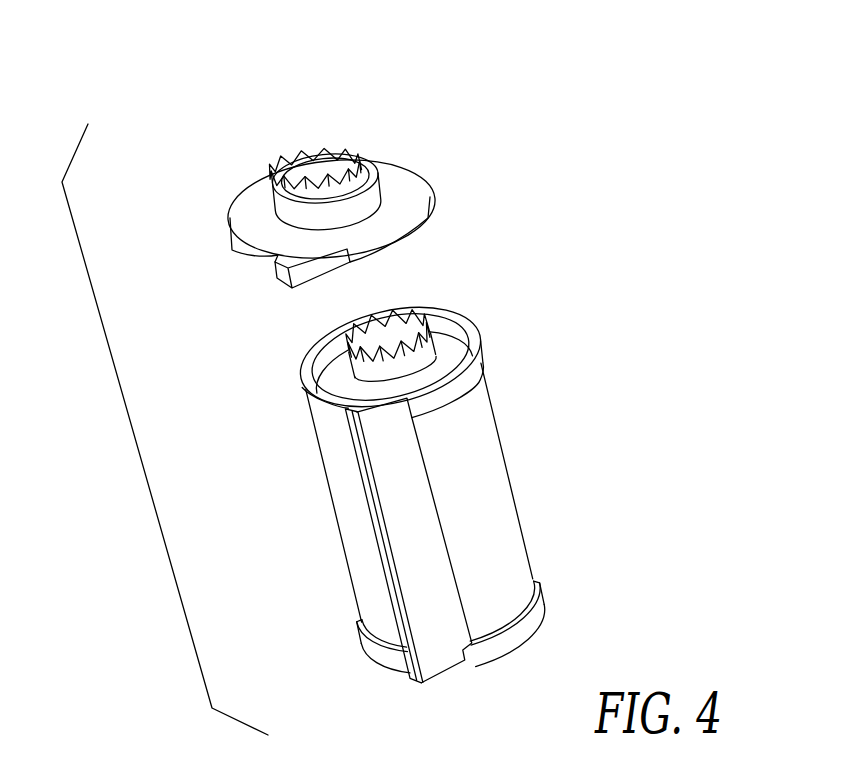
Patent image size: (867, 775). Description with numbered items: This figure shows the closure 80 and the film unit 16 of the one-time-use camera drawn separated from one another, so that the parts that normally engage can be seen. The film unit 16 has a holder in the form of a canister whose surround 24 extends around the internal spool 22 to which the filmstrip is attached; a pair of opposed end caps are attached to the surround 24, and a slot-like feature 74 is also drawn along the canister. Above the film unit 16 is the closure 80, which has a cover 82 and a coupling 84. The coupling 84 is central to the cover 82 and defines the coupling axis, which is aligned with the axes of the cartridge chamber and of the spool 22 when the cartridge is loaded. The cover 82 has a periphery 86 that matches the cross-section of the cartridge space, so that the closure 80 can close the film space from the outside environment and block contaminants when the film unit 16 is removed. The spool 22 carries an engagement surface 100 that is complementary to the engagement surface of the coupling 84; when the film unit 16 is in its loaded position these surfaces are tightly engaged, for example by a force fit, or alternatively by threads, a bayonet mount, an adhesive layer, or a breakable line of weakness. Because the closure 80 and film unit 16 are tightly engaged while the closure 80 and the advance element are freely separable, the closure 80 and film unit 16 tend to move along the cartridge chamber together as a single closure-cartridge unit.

The film unit 16 is at (323, 463).
The spool 22 is at (388, 307).
The surround 24 is at (492, 494).
The key slot rail 74 is at (382, 543).
The closure 80 is at (218, 203).
The cover 82 is at (407, 173).
The coupling 84 is at (327, 141).
The periphery 86 is at (420, 220).
The engagement surface 100 is at (440, 344).